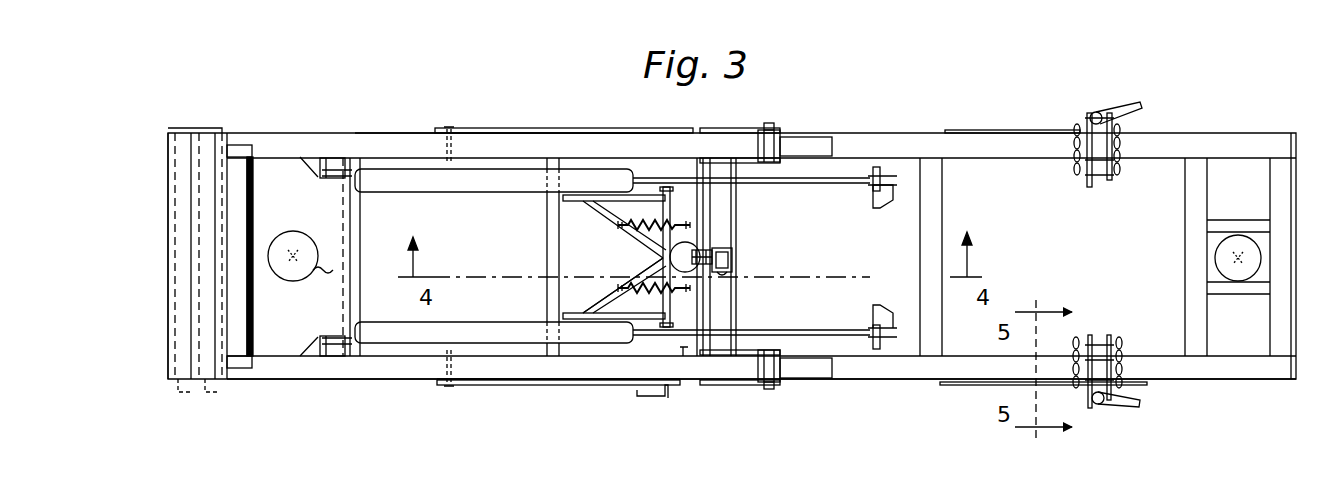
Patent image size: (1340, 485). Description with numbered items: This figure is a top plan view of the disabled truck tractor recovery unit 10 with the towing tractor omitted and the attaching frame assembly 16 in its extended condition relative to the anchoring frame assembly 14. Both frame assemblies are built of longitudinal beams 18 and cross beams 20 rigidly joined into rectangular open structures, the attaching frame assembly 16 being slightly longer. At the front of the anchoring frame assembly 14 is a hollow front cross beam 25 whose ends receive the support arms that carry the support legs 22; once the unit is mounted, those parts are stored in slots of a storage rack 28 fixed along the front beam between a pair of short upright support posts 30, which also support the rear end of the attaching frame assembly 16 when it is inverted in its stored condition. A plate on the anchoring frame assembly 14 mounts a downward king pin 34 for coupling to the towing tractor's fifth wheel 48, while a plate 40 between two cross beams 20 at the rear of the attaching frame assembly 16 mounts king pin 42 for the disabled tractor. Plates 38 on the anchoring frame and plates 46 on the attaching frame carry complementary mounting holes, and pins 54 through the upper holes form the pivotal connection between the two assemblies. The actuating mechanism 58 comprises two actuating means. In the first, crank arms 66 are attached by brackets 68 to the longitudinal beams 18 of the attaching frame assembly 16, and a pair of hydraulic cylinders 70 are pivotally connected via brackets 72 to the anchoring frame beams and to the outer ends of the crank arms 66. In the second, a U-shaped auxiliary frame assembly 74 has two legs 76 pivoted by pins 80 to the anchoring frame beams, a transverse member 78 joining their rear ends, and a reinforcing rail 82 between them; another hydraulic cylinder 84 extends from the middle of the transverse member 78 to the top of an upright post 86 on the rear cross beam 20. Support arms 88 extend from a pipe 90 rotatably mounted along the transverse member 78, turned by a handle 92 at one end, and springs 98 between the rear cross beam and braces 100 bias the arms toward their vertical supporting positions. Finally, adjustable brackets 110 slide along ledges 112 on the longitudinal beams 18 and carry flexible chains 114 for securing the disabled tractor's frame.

The disabled truck tractor recovery unit 10 is at (870, 92).
The anchoring frame assembly 14 is at (370, 381).
The attaching frame assembly 16 is at (863, 386).
The longitudinal beams 18 is at (495, 150).
The cross beams 20 is at (250, 295).
The support legs 22 is at (192, 388).
The front cross beam 25 is at (255, 340).
The storage rack 28 is at (180, 300).
The upright support posts 30 is at (258, 148).
The king pin 34 is at (293, 235).
The plates 38 is at (720, 136).
The plate 40 is at (1263, 282).
The king pin 42 is at (1242, 258).
The plates 46 is at (810, 140).
The fifth wheel 48 is at (324, 285).
The pins 54 is at (770, 123).
The actuating mechanism 58 is at (420, 131).
The crank arms 66 is at (887, 166).
The brackets 68 is at (885, 207).
The hydraulic cylinders 70 is at (485, 181).
The brackets 72 is at (320, 178).
The auxiliary frame assembly 74 is at (490, 386).
The legs 76 is at (570, 132).
The transverse member 78 is at (683, 358).
The pins 80 is at (448, 131).
The reinforcing rail 82 is at (547, 234).
The hydraulic cylinder 84 is at (700, 255).
The upright post 86 is at (735, 272).
The support arms 88 is at (600, 204).
The pipe 90 is at (668, 310).
The handle 92 is at (650, 397).
The springs 98 is at (658, 220).
The braces 100 is at (612, 305).
The adjustable brackets 110 is at (1095, 116).
The ledges 112 is at (980, 131).
The flexible chains 114 is at (1074, 172).